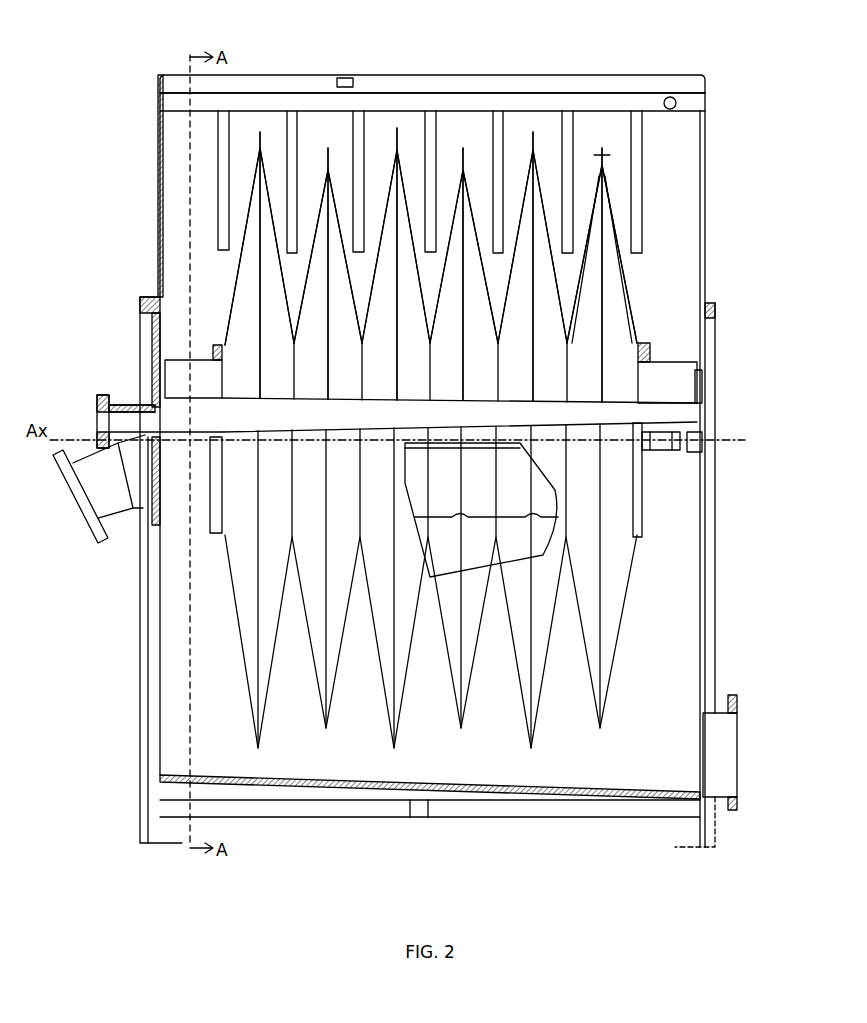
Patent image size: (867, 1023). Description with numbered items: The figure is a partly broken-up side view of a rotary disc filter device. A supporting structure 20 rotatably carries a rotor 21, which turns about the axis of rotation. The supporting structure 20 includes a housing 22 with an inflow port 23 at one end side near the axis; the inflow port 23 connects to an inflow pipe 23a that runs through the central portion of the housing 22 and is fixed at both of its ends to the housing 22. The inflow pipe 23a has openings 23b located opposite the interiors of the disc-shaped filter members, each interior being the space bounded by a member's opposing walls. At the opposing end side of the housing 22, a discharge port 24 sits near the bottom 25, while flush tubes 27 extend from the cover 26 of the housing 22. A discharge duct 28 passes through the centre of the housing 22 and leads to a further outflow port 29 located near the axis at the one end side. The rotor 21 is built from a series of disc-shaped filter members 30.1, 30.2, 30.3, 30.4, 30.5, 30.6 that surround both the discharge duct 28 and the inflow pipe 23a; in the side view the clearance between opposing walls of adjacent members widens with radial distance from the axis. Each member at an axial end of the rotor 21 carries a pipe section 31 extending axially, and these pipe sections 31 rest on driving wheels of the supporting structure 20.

The supporting structure 20 is at (114, 190).
The rotor 21 is at (220, 268).
The housing 22 is at (163, 717).
The inflow port 23 is at (85, 508).
The inflow pipe 23a is at (487, 485).
The openings 23b is at (460, 520).
The discharge port 24 is at (712, 733).
The bottom 25 is at (443, 800).
The cover 26 is at (250, 76).
The flush tubes 27 is at (220, 142).
The discharge duct 28 is at (655, 412).
The further outflow port 29 is at (113, 408).
The first disc-shaped filter member 30.1 is at (635, 335).
The disc-shaped filter member 30.2 is at (528, 178).
The third disc-shaped filter member 30.3 is at (463, 178).
The disc-shaped filter member 30.4 is at (395, 160).
The disc-shaped filter member 30.5 is at (328, 170).
The disc-shaped filter member 30.6 is at (258, 148).
The pipe section 31 is at (180, 362).